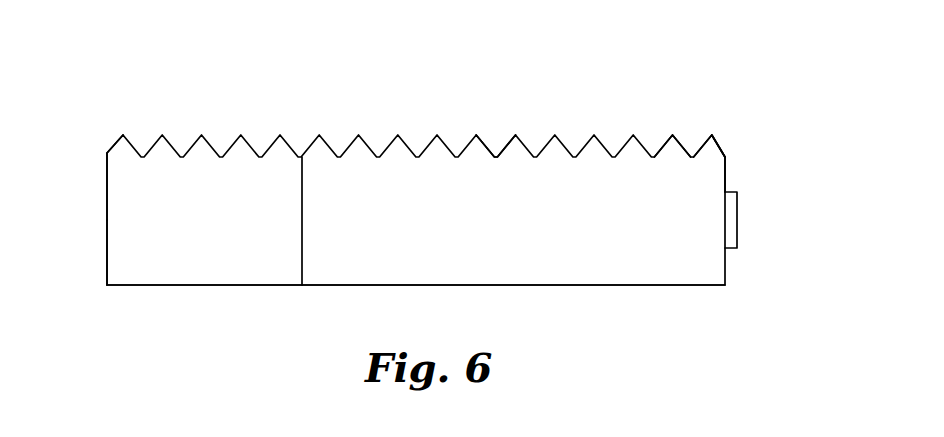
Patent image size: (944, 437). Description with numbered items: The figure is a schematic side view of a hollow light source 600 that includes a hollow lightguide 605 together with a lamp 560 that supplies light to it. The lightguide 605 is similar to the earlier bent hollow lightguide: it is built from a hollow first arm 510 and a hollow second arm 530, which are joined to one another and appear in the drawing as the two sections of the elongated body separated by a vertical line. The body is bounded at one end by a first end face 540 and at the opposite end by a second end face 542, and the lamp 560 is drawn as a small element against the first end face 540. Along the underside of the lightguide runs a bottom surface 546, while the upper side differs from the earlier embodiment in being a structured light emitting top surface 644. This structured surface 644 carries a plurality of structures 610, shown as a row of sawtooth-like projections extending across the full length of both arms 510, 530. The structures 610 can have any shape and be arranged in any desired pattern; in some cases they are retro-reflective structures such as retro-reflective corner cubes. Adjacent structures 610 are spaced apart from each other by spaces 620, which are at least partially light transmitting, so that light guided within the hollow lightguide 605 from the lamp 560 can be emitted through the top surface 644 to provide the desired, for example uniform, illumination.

The hollow light source 600 is at (706, 47).
The hollow first arm 510 is at (715, 263).
The hollow second arm 530 is at (107, 188).
The second end face 542 is at (117, 248).
The first end face 540 is at (725, 165).
The bottom surface 546 is at (673, 285).
The lamp 560 is at (732, 218).
The hollow lightguide 605 is at (352, 278).
The structures 610 is at (663, 148).
The spaces 620 is at (495, 156).
The structured light emitting top surface 644 is at (711, 137).